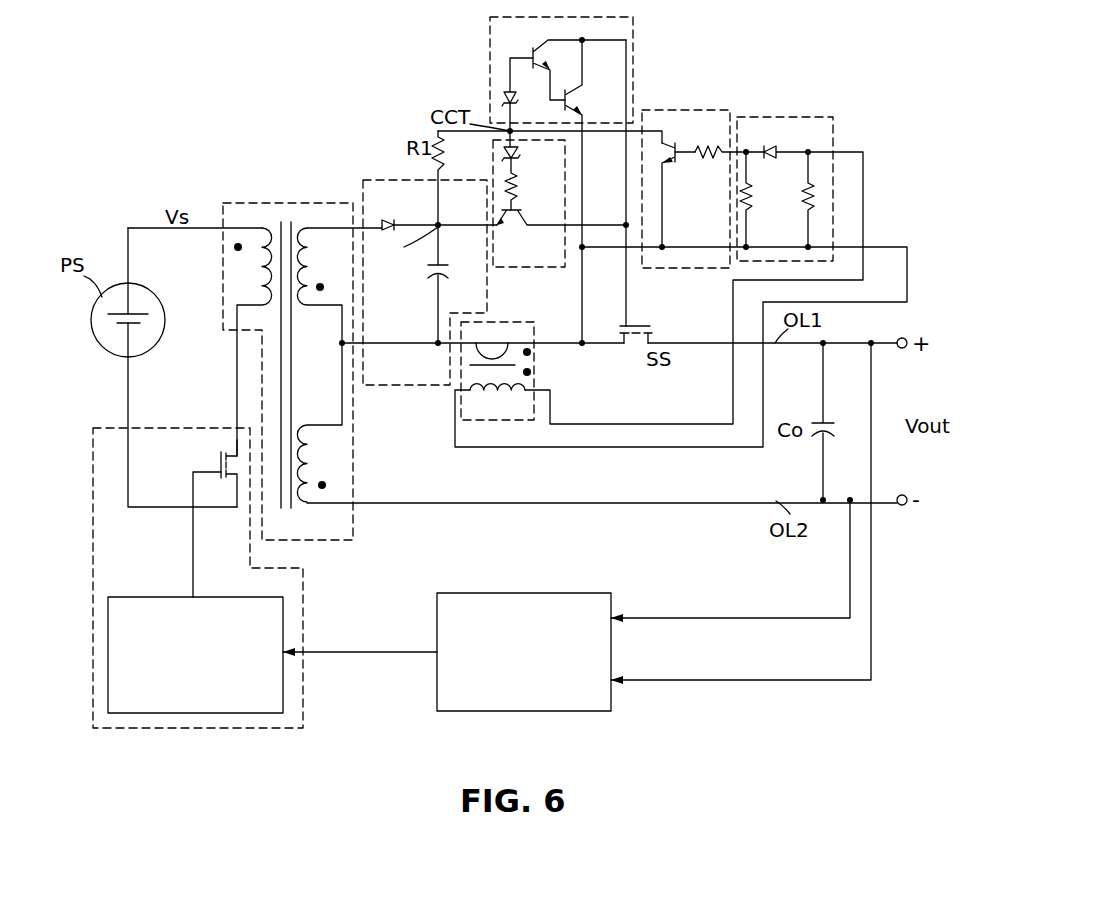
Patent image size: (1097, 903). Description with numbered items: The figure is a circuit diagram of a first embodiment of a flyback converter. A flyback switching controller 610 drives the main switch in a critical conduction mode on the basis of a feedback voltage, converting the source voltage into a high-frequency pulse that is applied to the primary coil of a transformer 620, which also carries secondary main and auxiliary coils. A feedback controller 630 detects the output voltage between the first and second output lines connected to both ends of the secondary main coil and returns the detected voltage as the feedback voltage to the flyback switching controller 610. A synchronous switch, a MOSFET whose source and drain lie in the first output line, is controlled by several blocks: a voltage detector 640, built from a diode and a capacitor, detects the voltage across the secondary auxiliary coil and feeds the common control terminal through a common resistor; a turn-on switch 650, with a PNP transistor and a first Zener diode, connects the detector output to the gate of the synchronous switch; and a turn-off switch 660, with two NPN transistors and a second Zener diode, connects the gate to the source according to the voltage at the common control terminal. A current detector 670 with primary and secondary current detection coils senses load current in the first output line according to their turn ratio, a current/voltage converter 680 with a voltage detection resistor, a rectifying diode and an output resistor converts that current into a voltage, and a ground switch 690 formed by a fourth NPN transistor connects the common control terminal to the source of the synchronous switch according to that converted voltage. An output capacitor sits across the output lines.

The flyback switching controller 610 is at (305, 630).
The transformer 620 is at (305, 203).
The feedback controller 630 is at (515, 593).
The voltage detector 640 is at (378, 180).
The turn-on switch 650 is at (560, 268).
The turn-off switch 660 is at (490, 43).
The current detector 670 is at (540, 382).
The current/voltage converter 680 is at (772, 117).
The ground switch 690 is at (670, 110).